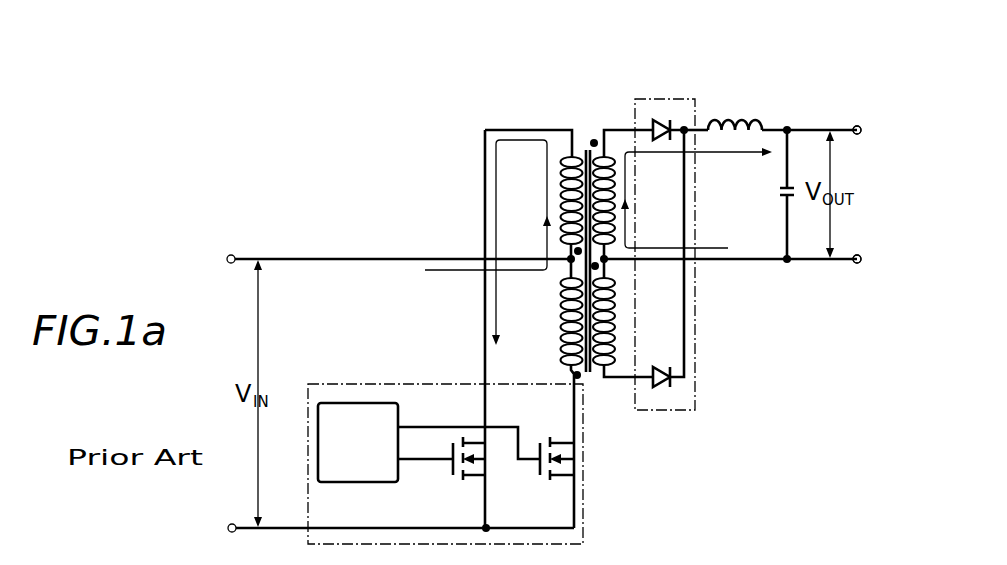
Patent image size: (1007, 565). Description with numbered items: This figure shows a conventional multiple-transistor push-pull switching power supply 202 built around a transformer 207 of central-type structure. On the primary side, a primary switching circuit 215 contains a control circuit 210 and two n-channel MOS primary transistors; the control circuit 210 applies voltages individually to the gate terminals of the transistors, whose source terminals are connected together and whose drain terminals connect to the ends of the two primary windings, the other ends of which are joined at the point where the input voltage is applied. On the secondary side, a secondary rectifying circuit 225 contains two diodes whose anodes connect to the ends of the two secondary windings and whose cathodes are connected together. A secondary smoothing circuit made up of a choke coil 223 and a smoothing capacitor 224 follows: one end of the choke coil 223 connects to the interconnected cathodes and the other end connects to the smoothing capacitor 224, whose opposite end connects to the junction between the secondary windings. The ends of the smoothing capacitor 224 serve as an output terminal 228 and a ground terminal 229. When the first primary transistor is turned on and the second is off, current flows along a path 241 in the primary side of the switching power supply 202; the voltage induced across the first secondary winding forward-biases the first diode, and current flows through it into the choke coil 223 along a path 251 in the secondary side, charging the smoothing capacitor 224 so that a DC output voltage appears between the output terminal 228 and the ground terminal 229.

The multiple-transistor push-pull switching power supply 202 is at (283, 118).
The transformer 207 is at (579, 139).
The control circuit 210 is at (353, 403).
The primary switching circuit 215 is at (583, 500).
The choke coil 223 is at (738, 121).
The smoothing capacitor 224 is at (780, 192).
The secondary rectifying circuit 225 is at (697, 361).
The output terminal 228 is at (857, 126).
The ground terminal 229 is at (857, 263).
The path 241 is at (515, 140).
The path 251 is at (717, 248).